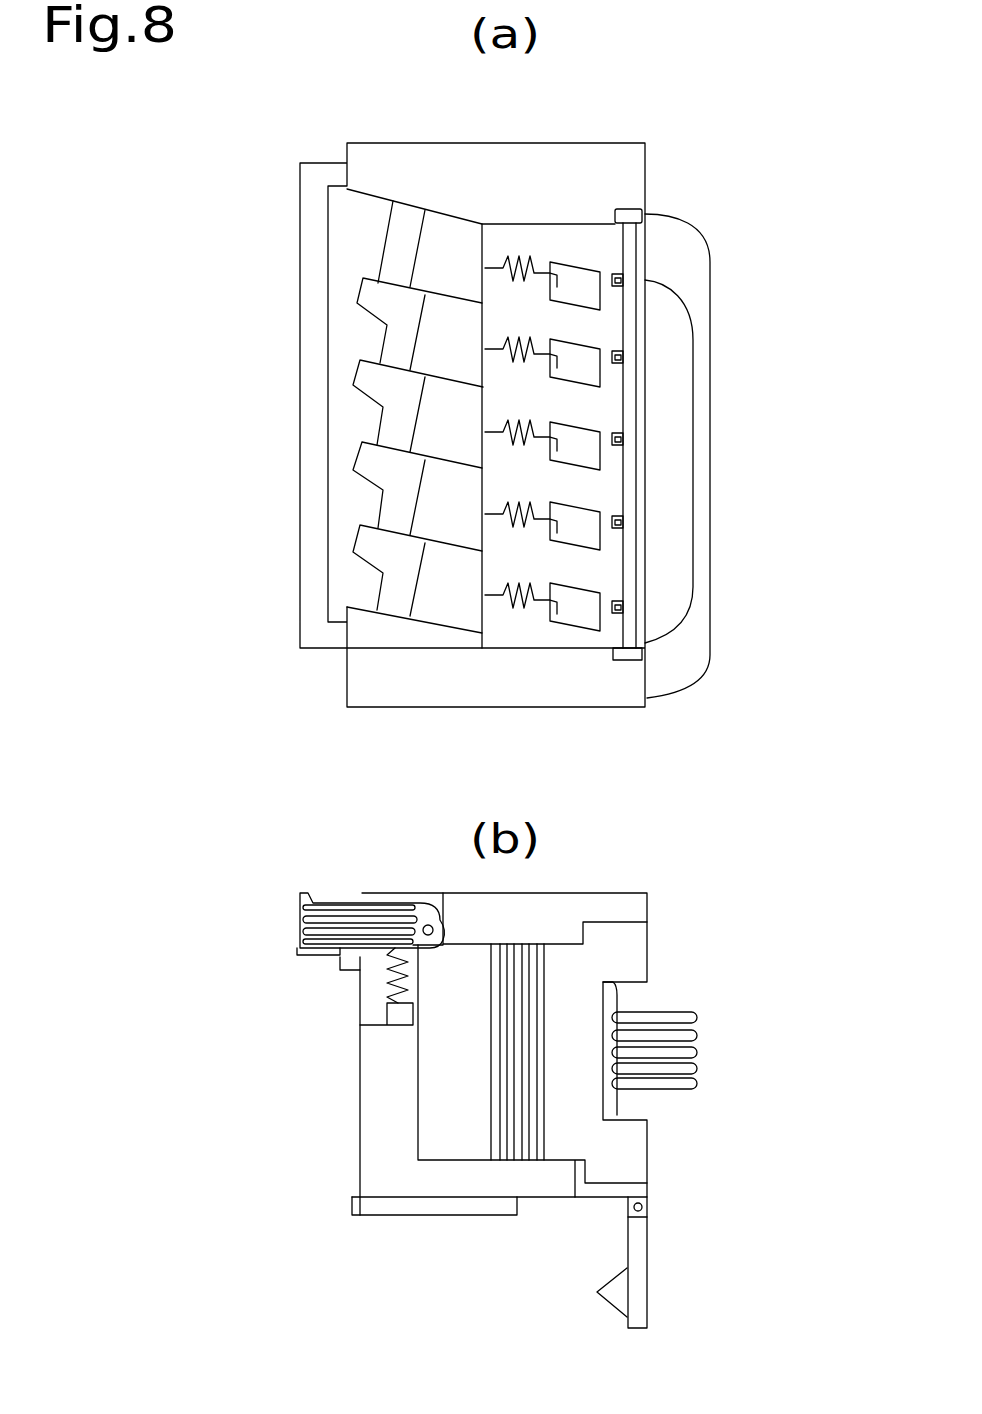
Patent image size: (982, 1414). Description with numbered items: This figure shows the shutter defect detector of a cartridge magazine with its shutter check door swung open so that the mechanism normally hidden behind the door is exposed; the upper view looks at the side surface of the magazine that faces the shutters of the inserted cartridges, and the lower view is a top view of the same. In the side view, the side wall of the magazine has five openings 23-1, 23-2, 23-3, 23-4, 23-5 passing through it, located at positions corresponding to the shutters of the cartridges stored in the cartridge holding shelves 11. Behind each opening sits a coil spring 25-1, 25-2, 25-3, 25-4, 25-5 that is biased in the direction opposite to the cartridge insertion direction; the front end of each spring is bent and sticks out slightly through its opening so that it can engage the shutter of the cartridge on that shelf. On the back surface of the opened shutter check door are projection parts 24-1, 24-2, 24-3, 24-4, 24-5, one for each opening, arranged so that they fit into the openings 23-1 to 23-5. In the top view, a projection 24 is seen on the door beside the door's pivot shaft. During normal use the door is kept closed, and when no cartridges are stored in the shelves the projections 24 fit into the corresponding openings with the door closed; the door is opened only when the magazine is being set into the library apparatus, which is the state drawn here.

The cartridge holding shelves 11 is at (342, 256).
The opening 23-1 is at (578, 277).
The opening 23-2 is at (582, 372).
The opening 23-3 is at (580, 450).
The opening 23-4 is at (573, 538).
The opening 23-5 is at (570, 617).
The projections 24 is at (625, 1268).
The projection part 24-1 is at (618, 288).
The projection part 24-2 is at (618, 363).
The projection part 24-3 is at (618, 447).
The projection part 24-4 is at (618, 528).
The projection part 24-5 is at (618, 608).
The coil spring 25-1 is at (509, 230).
The coil spring 25-2 is at (511, 333).
The coil spring 25-3 is at (510, 450).
The coil spring 25-4 is at (527, 503).
The coil spring 25-5 is at (510, 577).